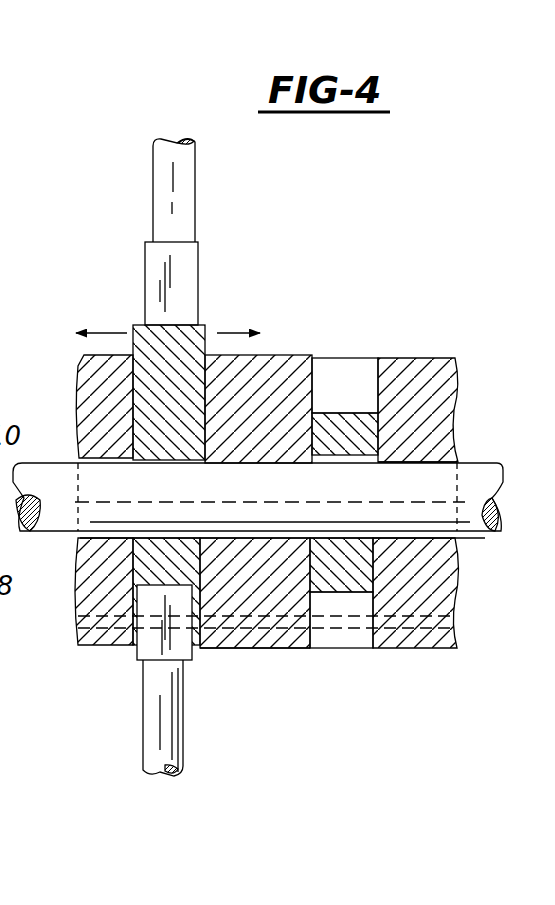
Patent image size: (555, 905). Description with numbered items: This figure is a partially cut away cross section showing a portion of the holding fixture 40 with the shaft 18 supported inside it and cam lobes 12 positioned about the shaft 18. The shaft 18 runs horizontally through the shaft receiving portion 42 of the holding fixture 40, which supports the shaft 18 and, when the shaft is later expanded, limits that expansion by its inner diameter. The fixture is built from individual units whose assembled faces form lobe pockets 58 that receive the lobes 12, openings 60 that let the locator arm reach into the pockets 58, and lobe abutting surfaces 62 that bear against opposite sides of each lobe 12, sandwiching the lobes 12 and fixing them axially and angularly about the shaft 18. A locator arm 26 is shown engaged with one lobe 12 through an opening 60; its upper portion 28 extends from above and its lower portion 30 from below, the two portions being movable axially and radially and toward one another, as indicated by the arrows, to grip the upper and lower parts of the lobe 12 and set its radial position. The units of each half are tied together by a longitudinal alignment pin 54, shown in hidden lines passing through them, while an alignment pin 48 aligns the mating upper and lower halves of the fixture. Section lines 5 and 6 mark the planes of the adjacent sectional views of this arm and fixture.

The section line 5- 5 is at (140, 160).
The section line 6- 6 is at (98, 308).
The cam lobe 12 is at (209, 326).
The shaft 18 is at (478, 475).
The locator arm 26 is at (197, 197).
The upper portion 28 is at (200, 267).
The lower portion 30 is at (192, 657).
The holding fixture 40 is at (303, 674).
The shaft receiving portion 42 is at (425, 458).
The alignment pin 48 is at (545, 554).
The longitudinal alignment pin 54 is at (415, 650).
The lobe pocket 58 is at (342, 398).
The opening 60 is at (364, 343).
The lobe abutting surface 62 is at (131, 403).